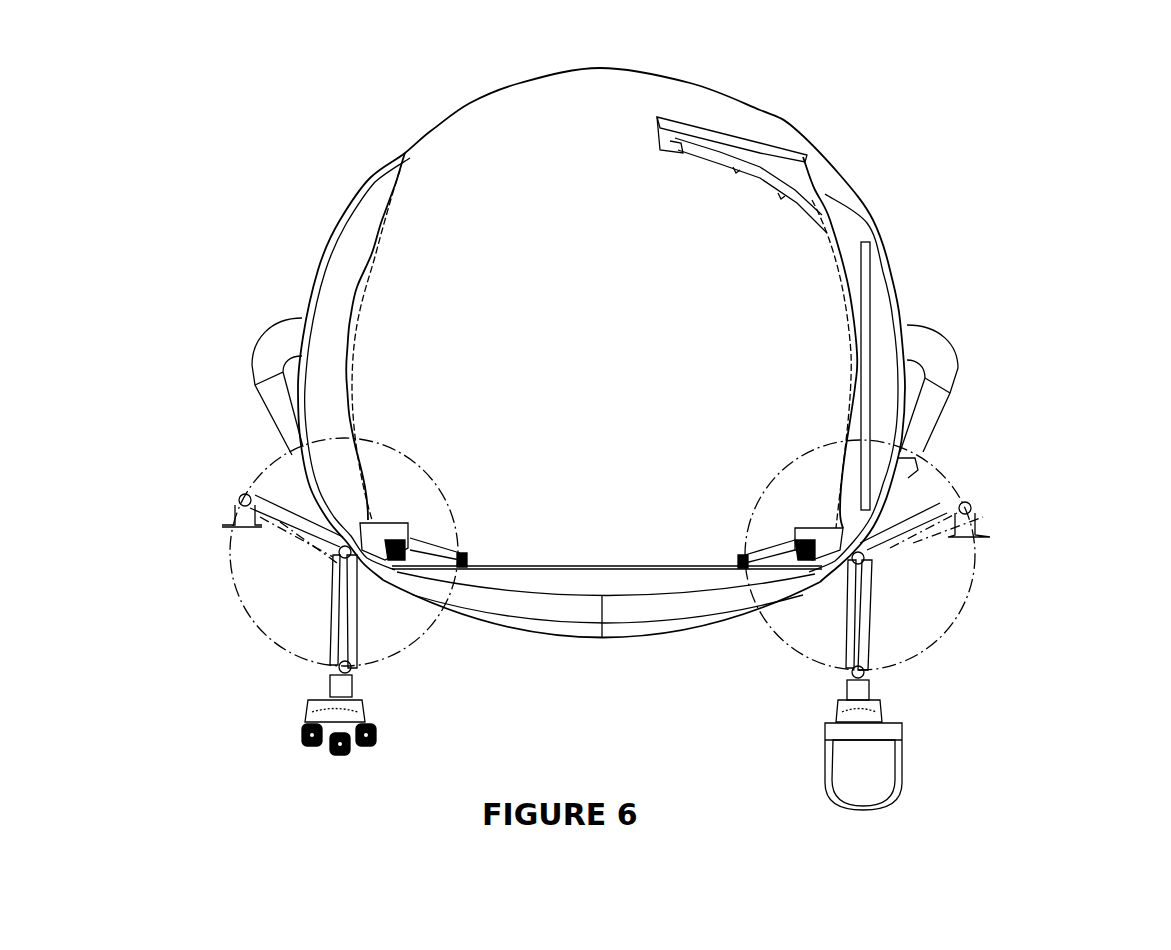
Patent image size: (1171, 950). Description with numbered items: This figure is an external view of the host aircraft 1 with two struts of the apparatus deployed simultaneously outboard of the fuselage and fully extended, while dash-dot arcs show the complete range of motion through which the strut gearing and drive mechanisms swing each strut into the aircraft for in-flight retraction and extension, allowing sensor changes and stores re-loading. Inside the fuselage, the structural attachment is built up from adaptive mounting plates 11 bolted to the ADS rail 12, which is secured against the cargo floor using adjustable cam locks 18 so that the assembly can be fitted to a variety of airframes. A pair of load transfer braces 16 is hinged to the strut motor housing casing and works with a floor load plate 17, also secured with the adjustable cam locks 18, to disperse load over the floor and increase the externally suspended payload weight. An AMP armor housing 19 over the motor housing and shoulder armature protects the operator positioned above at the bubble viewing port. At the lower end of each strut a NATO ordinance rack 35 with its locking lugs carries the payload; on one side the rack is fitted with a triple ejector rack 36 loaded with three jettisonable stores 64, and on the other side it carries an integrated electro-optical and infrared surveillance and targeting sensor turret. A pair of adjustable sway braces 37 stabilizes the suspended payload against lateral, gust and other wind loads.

The aircraft 1 is at (735, 95).
The adaptive mounting plate 11 is at (403, 543).
The ADS rail 12 is at (405, 560).
The load transfer brace 16 is at (775, 548).
The floor load plate 17 is at (735, 563).
The adjustable cam lock 18 is at (738, 560).
The AMP armor housing 19 is at (968, 505).
The NATO ordinance rack 35 is at (325, 680).
The triple ejector rack 36 is at (335, 708).
The adjustable sway brace 37 is at (938, 372).
The jettisonable stores 64 is at (300, 735).